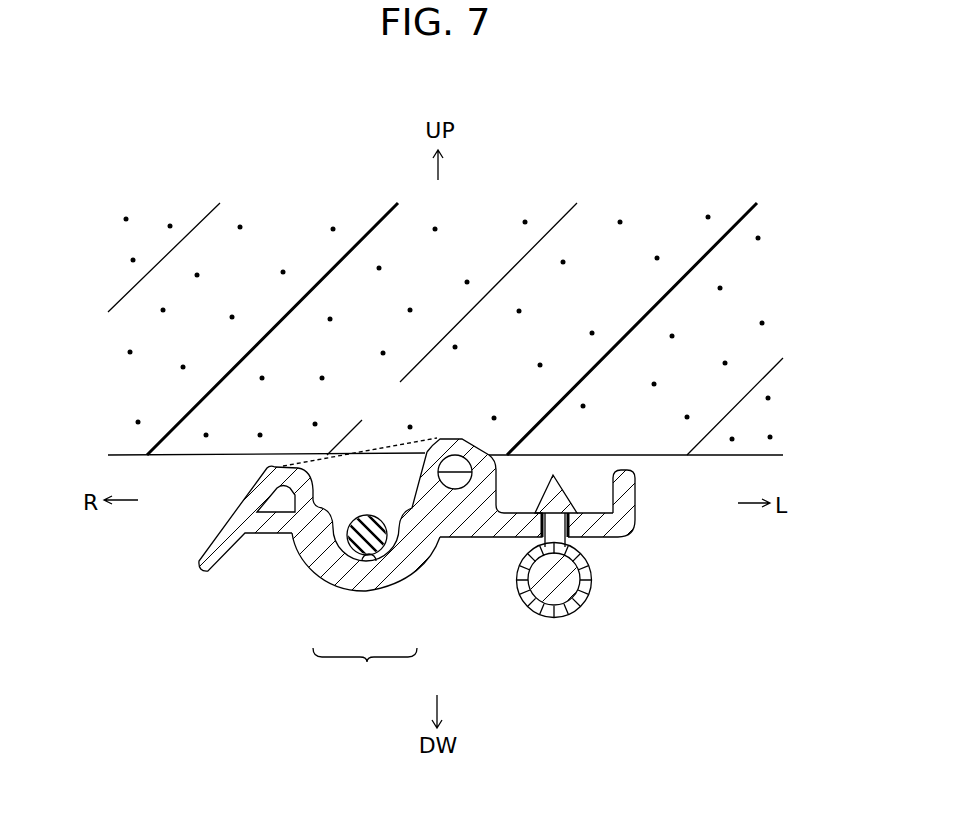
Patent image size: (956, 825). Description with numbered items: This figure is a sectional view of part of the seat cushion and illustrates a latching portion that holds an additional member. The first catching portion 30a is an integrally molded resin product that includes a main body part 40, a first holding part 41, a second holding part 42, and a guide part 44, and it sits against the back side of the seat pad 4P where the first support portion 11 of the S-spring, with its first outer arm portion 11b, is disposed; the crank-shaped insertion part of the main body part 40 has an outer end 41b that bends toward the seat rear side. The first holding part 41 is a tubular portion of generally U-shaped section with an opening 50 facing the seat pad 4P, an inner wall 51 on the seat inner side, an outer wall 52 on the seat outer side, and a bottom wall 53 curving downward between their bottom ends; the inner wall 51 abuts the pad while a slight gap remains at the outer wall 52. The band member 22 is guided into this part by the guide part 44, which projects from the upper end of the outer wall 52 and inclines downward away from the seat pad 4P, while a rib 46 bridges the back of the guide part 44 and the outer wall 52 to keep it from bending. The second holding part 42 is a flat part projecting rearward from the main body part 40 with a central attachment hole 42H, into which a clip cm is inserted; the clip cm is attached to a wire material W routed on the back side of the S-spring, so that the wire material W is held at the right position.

The seat pad 4P is at (590, 262).
The main body part 40 is at (478, 412).
The first holding part 41 is at (306, 539).
The outer end 41b is at (486, 479).
The second holding part 42 is at (513, 537).
The attachment hole 42H is at (592, 597).
The guide part 44 is at (240, 512).
The rib 46 is at (270, 527).
The opening 50 is at (380, 447).
The inner wall 51 is at (401, 562).
The outer wall 52 is at (332, 567).
The bottom wall 53 is at (364, 565).
The first support portion 11 is at (463, 429).
The first outer arm portion 11b is at (455, 470).
The band member 22 is at (367, 516).
The first catching portion 30a is at (630, 544).
The clip cm is at (557, 500).
The wire material W is at (555, 552).